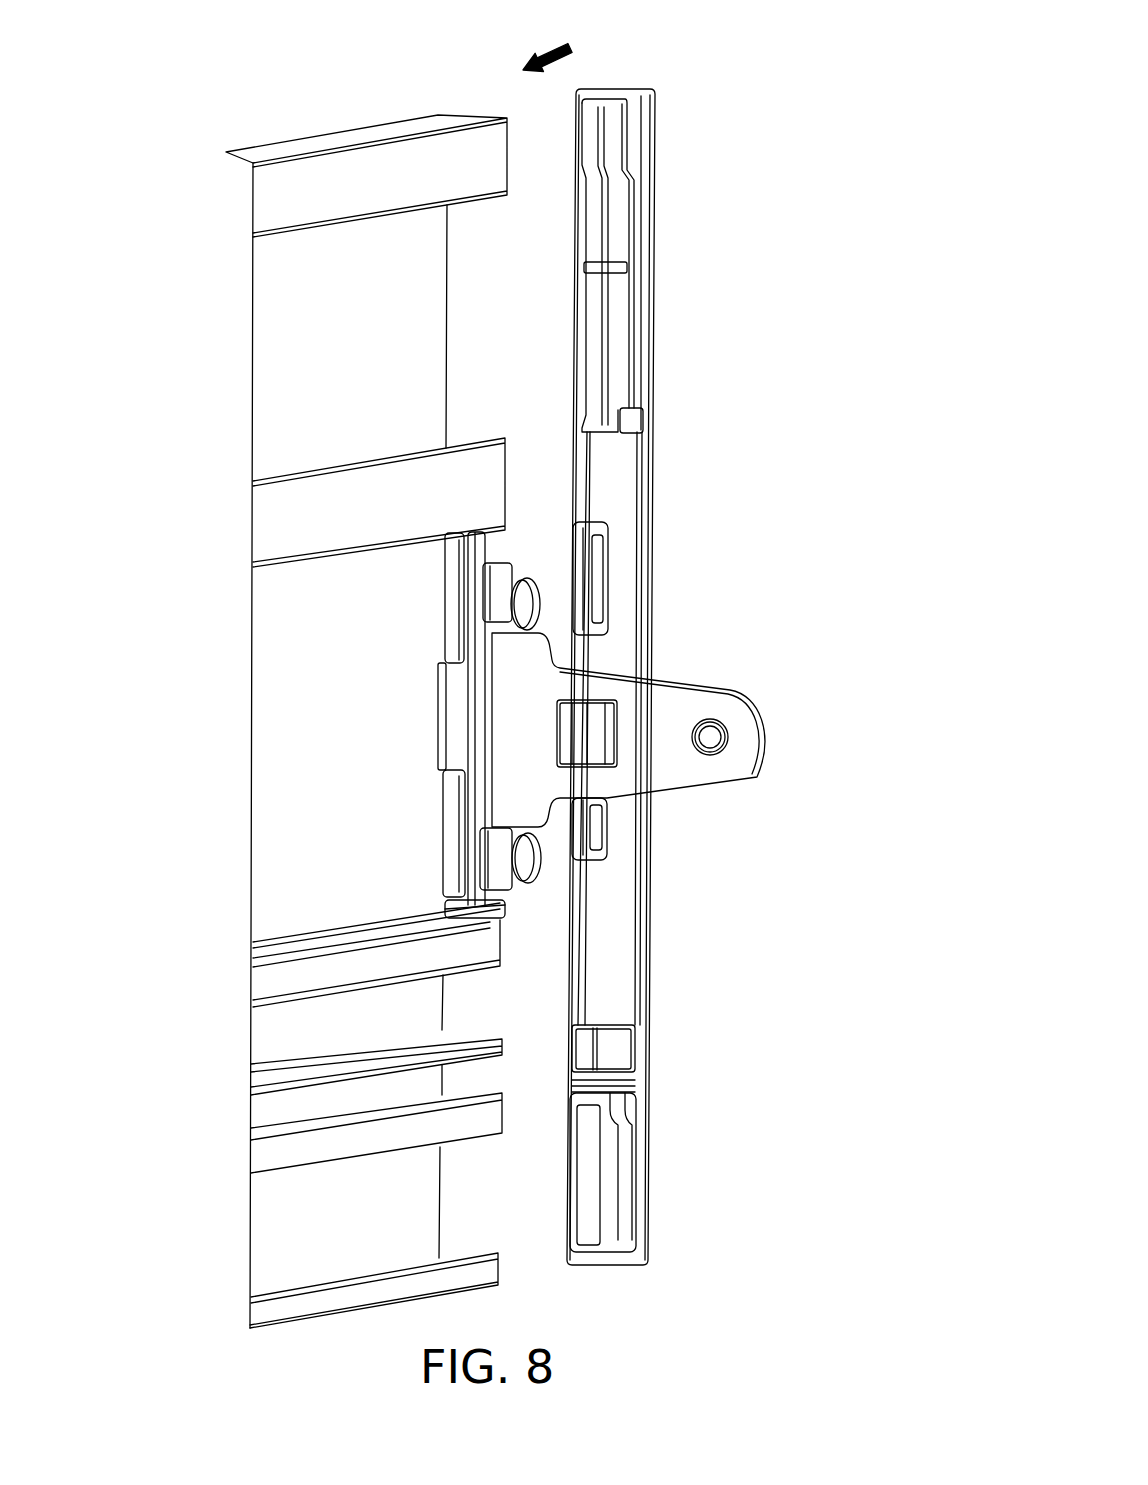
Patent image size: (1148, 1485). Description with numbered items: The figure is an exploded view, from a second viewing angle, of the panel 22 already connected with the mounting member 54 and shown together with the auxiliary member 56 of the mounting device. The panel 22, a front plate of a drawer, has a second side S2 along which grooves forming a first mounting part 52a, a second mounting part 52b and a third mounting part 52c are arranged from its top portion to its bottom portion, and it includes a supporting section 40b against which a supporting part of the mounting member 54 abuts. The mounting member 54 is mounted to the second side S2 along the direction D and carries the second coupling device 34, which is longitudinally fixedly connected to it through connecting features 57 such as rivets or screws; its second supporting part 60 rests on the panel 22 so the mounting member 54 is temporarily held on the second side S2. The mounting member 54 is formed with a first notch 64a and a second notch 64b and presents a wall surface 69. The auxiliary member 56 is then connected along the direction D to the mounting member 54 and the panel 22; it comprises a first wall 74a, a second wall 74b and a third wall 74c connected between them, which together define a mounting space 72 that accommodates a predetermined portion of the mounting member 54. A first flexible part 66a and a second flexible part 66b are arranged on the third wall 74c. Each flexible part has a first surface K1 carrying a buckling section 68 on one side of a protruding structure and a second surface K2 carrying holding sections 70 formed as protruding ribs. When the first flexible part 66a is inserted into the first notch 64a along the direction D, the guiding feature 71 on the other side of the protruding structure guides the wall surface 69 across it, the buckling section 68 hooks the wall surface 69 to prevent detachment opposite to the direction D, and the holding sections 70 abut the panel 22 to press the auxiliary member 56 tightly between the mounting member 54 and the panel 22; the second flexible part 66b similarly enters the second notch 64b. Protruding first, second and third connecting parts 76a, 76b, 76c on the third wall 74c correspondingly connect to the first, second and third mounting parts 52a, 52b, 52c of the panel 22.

The panel 22 is at (280, 795).
The second coupling device 34 is at (757, 782).
The supporting section 40b is at (470, 512).
The first mounting part 52a is at (458, 312).
The second mounting part 52b is at (483, 1085).
The third mounting part 52c is at (483, 1237).
The mounting member 54 is at (432, 735).
The auxiliary member 56 is at (628, 82).
The connecting feature 57 is at (530, 598).
The second supporting part 60 is at (457, 913).
The first notch 64a is at (452, 612).
The second notch 64b is at (452, 828).
The first flexible part 66a is at (610, 577).
The second flexible part 66b is at (608, 822).
The buckling section 68 is at (603, 607).
The wall surface 69 is at (465, 573).
The holding section 70 is at (575, 523).
The guiding feature 71 is at (600, 560).
The mounting space 72 is at (608, 883).
The first wall 74a is at (578, 925).
The second wall 74b is at (640, 922).
The third wall 74c is at (608, 942).
The first connecting part 76a is at (576, 197).
The second connecting part 76b is at (630, 1080).
The third connecting part 76c is at (625, 1192).
The first surface K1 is at (600, 530).
The second surface K2 is at (583, 570).
The second side S2 is at (472, 113).
The direction D is at (559, 53).